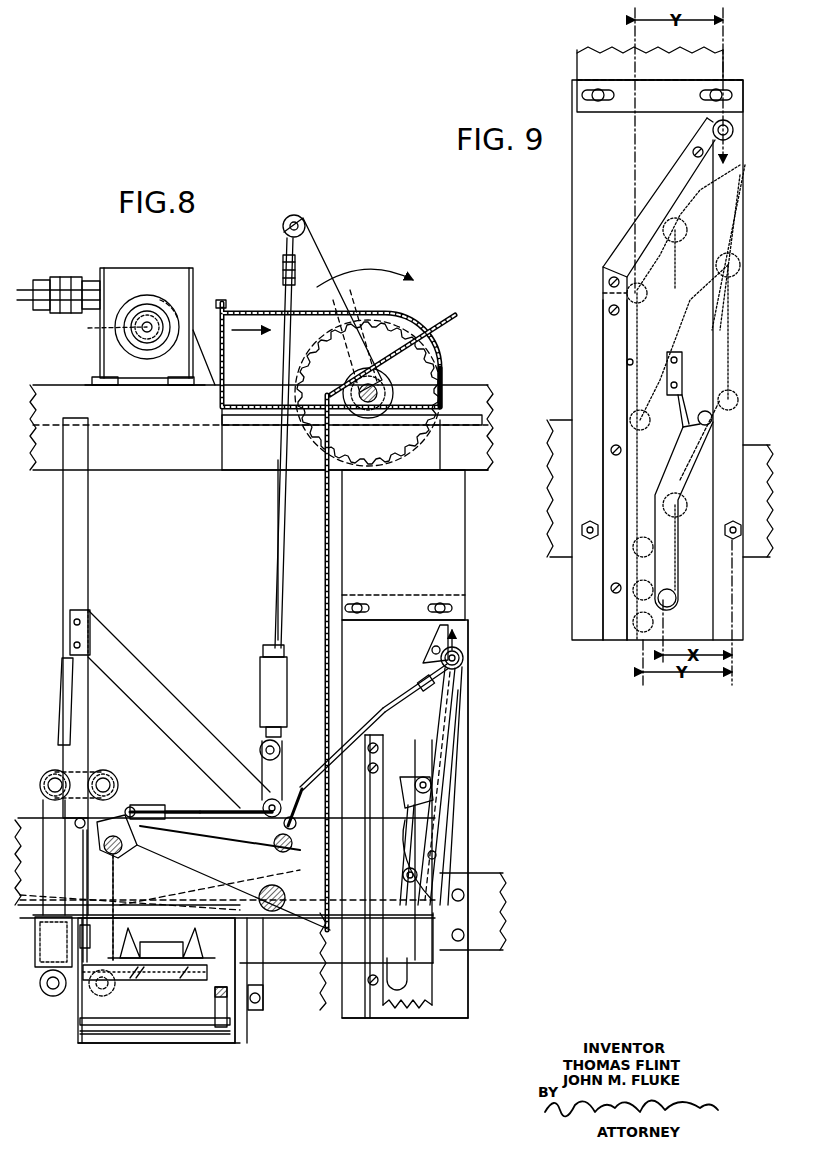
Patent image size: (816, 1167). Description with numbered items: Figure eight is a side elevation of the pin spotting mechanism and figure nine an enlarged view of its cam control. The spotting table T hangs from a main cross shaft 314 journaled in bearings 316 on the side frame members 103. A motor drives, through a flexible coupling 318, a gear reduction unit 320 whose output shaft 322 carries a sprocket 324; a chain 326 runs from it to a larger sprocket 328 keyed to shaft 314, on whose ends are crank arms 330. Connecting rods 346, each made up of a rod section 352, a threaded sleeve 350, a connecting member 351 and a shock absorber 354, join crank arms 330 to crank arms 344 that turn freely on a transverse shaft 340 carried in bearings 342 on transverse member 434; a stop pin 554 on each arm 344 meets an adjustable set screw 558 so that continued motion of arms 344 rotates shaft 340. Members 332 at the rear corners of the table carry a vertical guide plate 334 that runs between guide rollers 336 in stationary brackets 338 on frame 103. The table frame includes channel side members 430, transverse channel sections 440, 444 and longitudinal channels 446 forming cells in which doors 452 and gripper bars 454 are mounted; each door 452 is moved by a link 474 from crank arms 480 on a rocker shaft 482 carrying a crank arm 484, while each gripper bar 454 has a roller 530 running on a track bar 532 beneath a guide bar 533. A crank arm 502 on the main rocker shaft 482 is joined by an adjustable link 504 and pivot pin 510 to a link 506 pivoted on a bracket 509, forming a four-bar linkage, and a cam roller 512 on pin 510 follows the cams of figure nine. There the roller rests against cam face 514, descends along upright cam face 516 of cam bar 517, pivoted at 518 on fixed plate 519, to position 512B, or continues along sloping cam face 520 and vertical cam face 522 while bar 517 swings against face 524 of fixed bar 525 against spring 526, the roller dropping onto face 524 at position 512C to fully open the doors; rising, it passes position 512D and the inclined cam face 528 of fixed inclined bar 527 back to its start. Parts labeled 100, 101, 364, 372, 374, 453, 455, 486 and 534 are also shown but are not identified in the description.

In FIG. 8, the conveyor chain 100 is at (222, 313).
In FIG. 8, the frame member 101 is at (470, 430).
In FIG. 8, the side frame member 103 is at (495, 907).
In FIG. 9, the side frame member 103 is at (562, 484).
In FIG. 8, the main cross shaft 314 is at (370, 385).
In FIG. 8, the bearings 316 is at (440, 425).
In FIG. 8, the flexible coupling 318 is at (58, 285).
In FIG. 8, the gear reduction unit 320 is at (128, 287).
In FIG. 8, the output shaft 322 is at (103, 327).
In FIG. 8, the sprocket 324 is at (147, 316).
In FIG. 8, the chain 326 is at (290, 315).
In FIG. 8, the sprocket 328 is at (315, 372).
In FIG. 8, the crank arms 330 is at (330, 277).
In FIG. 8, the upwardly extending members 332 is at (90, 637).
In FIG. 8, the vertical guide plate 334 is at (78, 507).
In FIG. 8, the guide rollers 336 is at (65, 790).
In FIG. 8, the stationary brackets 338 is at (50, 810).
In FIG. 8, the transverse shaft 340 is at (262, 892).
In FIG. 8, the bearings 342 is at (235, 902).
In FIG. 8, the crank arms 344 is at (291, 749).
In FIG. 8, the connecting rods 346 is at (272, 538).
In FIG. 8, the adjustable threaded sleeve 350 is at (284, 252).
In FIG. 8, the connecting member 351 is at (265, 748).
In FIG. 8, the intermediate rod section 352 is at (277, 565).
In FIG. 8, the shock absorber 354 is at (258, 669).
In FIG. 8, the conveyor chain 364 is at (440, 318).
In FIG. 8, the sprocket hub 372 is at (395, 372).
In FIG. 8, the frame break 374 is at (307, 961).
In FIG. 8, the channel section side members 430 is at (295, 947).
In FIG. 8, the transverse member 434 is at (40, 967).
In FIG. 8, the transverse channel section 440 is at (420, 1022).
In FIG. 8, the transverse channel section 444 is at (80, 1020).
In FIG. 8, the longitudinal channels 446 is at (130, 1036).
In FIG. 8, the door 452 is at (149, 966).
In FIG. 8, the plate 453 is at (103, 1006).
In FIG. 8, the gripper bar 454 is at (100, 1033).
In FIG. 8, the rod 455 is at (152, 907).
In FIG. 8, the link 474 is at (88, 879).
In FIG. 8, the crank arms 480 is at (107, 800).
In FIG. 8, the rocker shaft 482 is at (150, 820).
In FIG. 8, the crank arm 484 is at (145, 802).
In FIG. 8, the rod sleeve 486 is at (165, 808).
In FIG. 8, the crank arm 502 is at (275, 810).
In FIG. 8, the adjustable link 504 is at (403, 698).
In FIG. 8, the link 506 is at (440, 714).
In FIG. 8, the bracket 509 is at (435, 797).
In FIG. 8, the pivot pin 510 is at (465, 657).
In FIG. 8, the cam roller 512 is at (458, 650).
In FIG. 9, the cam roller 512 is at (750, 117).
In FIG. 9, the roller position 512B is at (735, 392).
In FIG. 9, the roller position 512C is at (638, 640).
In FIG. 9, the roller position 512D is at (657, 310).
In FIG. 8, the cam face 514 is at (455, 628).
In FIG. 9, the cam face 514 is at (706, 146).
In FIG. 8, the upright cam face 516 is at (458, 754).
In FIG. 9, the upright cam face 516 is at (716, 242).
In FIG. 8, the cam bar 517 is at (450, 777).
In FIG. 9, the cam bar 517 is at (705, 220).
In FIG. 8, the pivot 518 is at (430, 872).
In FIG. 9, the pivot 518 is at (712, 432).
In FIG. 8, the plate 519 is at (470, 733).
In FIG. 9, the plate 519 is at (585, 170).
In FIG. 8, the sloping cam face 520 is at (420, 877).
In FIG. 9, the sloping cam face 520 is at (686, 510).
In FIG. 8, the vertical cam face 522 is at (407, 977).
In FIG. 9, the vertical cam face 522 is at (675, 582).
In FIG. 8, the vertical cam face 524 is at (398, 765).
In FIG. 9, the vertical cam face 524 is at (627, 364).
In FIG. 8, the fixed bar 525 is at (372, 1005).
In FIG. 9, the fixed bar 525 is at (608, 352).
In FIG. 8, the spring 526 is at (412, 832).
In FIG. 9, the spring 526 is at (680, 434).
In FIG. 8, the fixed inclined bar 527 is at (415, 674).
In FIG. 9, the fixed inclined bar 527 is at (632, 250).
In FIG. 8, the inclined cam face 528 is at (392, 712).
In FIG. 9, the inclined cam face 528 is at (690, 207).
In FIG. 8, the roller 530 is at (225, 1022).
In FIG. 8, the track bar 532 is at (252, 1012).
In FIG. 8, the guide bar 533 is at (248, 1003).
In FIG. 8, the stop 534 is at (215, 1010).
In FIG. 8, the stop pin 554 is at (255, 872).
In FIG. 8, the adjustable set screw 558 is at (233, 887).